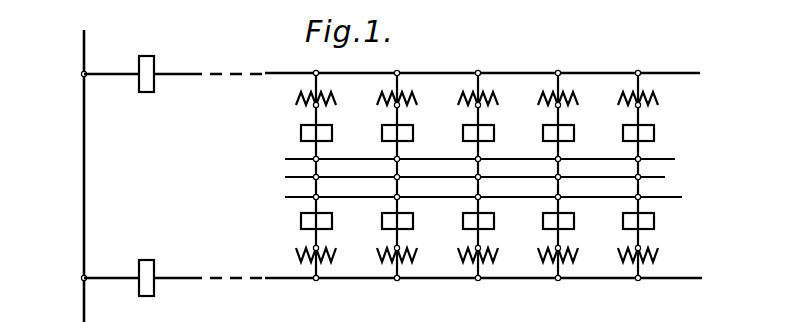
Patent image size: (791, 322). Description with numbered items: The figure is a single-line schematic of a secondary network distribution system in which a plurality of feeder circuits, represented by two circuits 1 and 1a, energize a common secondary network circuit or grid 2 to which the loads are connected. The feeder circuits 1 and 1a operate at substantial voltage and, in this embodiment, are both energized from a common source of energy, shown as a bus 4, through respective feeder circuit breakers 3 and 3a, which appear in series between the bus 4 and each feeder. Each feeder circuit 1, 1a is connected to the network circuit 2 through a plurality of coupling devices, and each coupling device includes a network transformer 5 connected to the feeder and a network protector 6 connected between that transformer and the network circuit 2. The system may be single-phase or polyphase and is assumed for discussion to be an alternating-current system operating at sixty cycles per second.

The feeder circuit 1 is at (228, 58).
The feeder circuit 1a is at (233, 264).
The secondary network circuit 2 is at (665, 177).
The feeder circuit breaker 3 is at (140, 62).
The feeder circuit breaker 3a is at (141, 266).
The bus 4 is at (82, 179).
The network transformer 5 is at (297, 100).
The network protector 6 is at (301, 133).